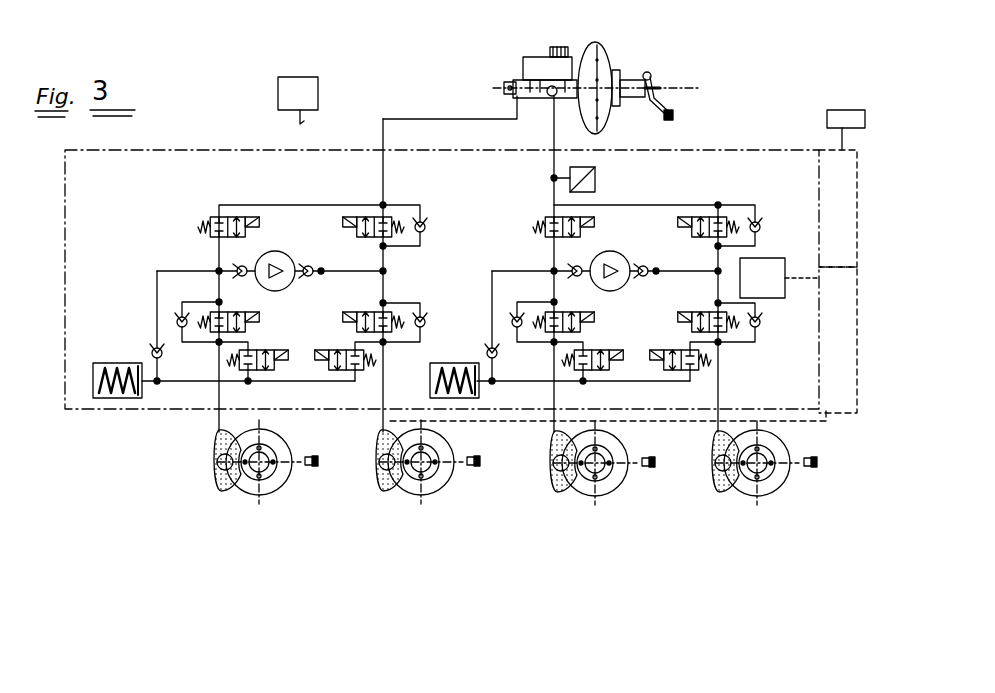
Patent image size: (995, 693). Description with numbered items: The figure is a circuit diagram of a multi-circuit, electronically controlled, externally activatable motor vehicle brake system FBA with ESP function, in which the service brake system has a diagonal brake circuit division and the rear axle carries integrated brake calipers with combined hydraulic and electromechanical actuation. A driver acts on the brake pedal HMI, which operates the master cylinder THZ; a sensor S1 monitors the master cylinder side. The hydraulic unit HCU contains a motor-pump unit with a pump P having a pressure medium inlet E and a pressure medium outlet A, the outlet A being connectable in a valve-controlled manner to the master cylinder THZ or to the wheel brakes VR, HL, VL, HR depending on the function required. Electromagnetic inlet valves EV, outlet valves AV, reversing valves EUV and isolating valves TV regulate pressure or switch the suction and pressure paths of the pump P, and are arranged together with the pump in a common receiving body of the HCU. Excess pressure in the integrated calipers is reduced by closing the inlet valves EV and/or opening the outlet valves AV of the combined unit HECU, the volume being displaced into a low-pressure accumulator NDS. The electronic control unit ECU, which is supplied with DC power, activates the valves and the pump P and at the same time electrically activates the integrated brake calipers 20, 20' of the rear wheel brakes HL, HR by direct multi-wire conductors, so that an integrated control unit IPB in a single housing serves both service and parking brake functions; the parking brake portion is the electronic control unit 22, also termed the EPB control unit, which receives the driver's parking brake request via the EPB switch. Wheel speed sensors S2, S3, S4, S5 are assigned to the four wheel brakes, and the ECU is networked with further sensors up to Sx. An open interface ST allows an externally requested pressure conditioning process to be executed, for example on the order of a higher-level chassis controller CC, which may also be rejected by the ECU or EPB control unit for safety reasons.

The motor vehicle brake system FBA is at (459, 586).
The hydraulic electronic control unit HECU is at (788, 148).
The electronic control unit ECU is at (838, 208).
The electronic control unit (ECU (EPB)) 22 is at (848, 413).
The hydraulic unit HCU is at (802, 382).
The sensor Sx is at (846, 130).
The DC 12V supply DC is at (830, 219).
The chassis controller CC is at (298, 100).
The open interface ST is at (290, 128).
The integrated control unit IPB is at (820, 315).
The EPB-ECU EPB is at (779, 278).
The master cylinder THZ is at (527, 76).
The brake pedal (human machine interface) HMI is at (670, 117).
The sensor S1 is at (595, 178).
The reversing valve EUV is at (411, 227).
The isolating valve TV is at (529, 227).
The inlet valve EV is at (468, 322).
The outlet valve AV is at (469, 374).
The pump P is at (282, 256).
The pressure medium outlet A is at (230, 273).
The pressure medium inlet E is at (345, 260).
The low-pressure accumulator NDS is at (286, 372).
The wheel brake VR is at (243, 463).
The wheel brake HL is at (406, 463).
The wheel brake VL is at (579, 464).
The wheel brake HR is at (743, 464).
The brake caliper 20 is at (406, 490).
The brake caliper 20' is at (743, 500).
The sensor S2 is at (315, 467).
The sensor S3 is at (477, 467).
The sensor S4 is at (652, 468).
The sensor S5 is at (814, 468).